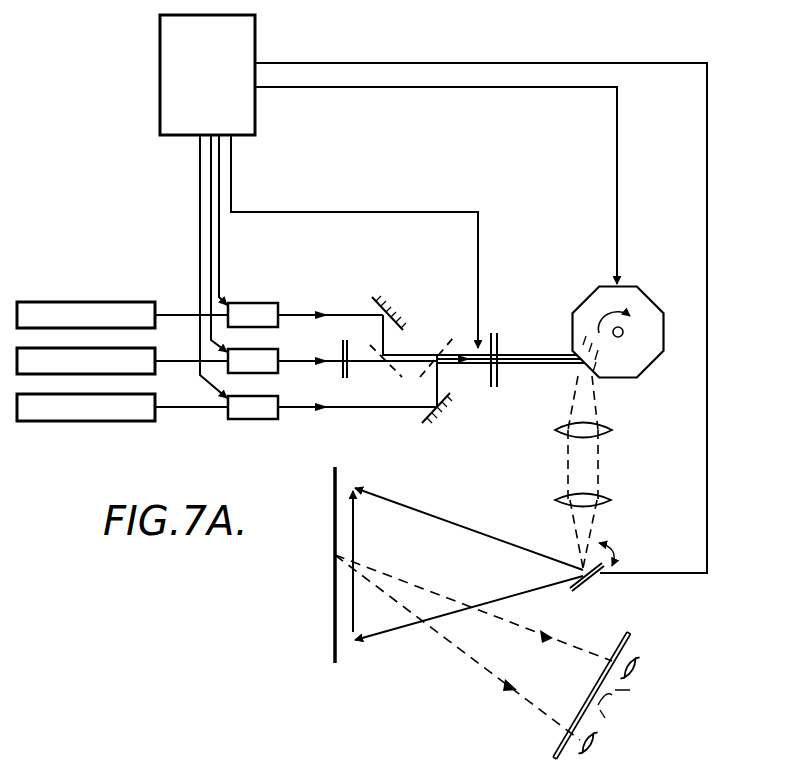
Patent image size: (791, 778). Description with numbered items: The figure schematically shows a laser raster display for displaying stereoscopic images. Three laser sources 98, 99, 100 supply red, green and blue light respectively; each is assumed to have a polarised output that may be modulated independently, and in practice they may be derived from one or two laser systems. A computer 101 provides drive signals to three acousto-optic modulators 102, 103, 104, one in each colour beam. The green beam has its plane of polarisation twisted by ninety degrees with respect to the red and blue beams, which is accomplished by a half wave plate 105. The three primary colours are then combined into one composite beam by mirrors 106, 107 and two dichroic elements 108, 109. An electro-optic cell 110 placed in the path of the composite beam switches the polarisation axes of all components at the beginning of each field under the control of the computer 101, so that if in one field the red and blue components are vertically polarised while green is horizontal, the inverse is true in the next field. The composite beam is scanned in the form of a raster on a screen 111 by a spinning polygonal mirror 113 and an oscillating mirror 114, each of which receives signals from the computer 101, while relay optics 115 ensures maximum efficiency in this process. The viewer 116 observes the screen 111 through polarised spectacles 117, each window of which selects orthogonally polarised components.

The laser source 98 is at (70, 306).
The laser source 99 is at (86, 363).
The laser source 100 is at (50, 409).
The computer 101 is at (225, 91).
The acousto-optic modulator 102 is at (265, 312).
The acousto-optic modulator 103 is at (265, 366).
The acousto-optic modulator 104 is at (265, 410).
The half wave plate 105 is at (344, 372).
The mirror 106 is at (386, 300).
The mirror 107 is at (424, 416).
The dichroic element 108 is at (392, 368).
The dichroic element 109 is at (446, 351).
The electro-optic cell 110 is at (499, 372).
The screen 111 is at (335, 650).
The spinning polygonal mirror 113 is at (646, 292).
The oscillating mirror 114 is at (590, 583).
The relay optics 115 is at (606, 431).
The viewer 116 is at (603, 730).
The polarised spectacles 117 is at (552, 750).